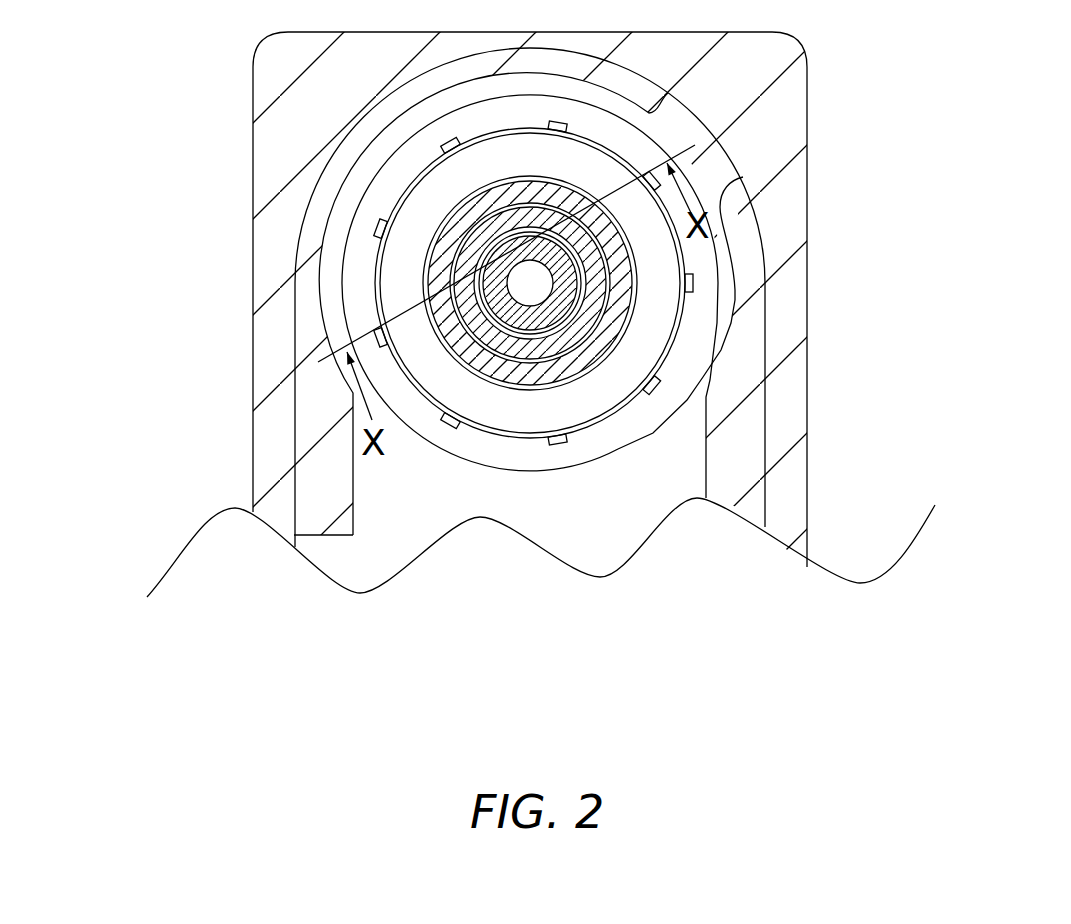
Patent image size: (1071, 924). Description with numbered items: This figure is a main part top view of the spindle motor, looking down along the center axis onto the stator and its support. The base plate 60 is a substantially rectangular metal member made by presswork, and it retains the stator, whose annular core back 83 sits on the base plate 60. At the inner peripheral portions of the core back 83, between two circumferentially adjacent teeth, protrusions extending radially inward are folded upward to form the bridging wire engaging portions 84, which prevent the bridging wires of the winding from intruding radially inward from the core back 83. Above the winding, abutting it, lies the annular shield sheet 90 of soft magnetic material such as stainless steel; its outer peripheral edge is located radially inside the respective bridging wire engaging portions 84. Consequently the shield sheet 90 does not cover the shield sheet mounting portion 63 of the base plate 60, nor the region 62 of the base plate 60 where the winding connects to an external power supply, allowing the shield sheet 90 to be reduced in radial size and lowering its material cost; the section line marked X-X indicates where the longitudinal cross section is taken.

The base plate 60 is at (220, 196).
The retaining member 62 is at (688, 166).
The shield sheet mounting portion 63 is at (330, 264).
The core back 83 is at (690, 349).
The bridging wire engaging portion 84 is at (690, 286).
The shield sheet 90 is at (495, 405).